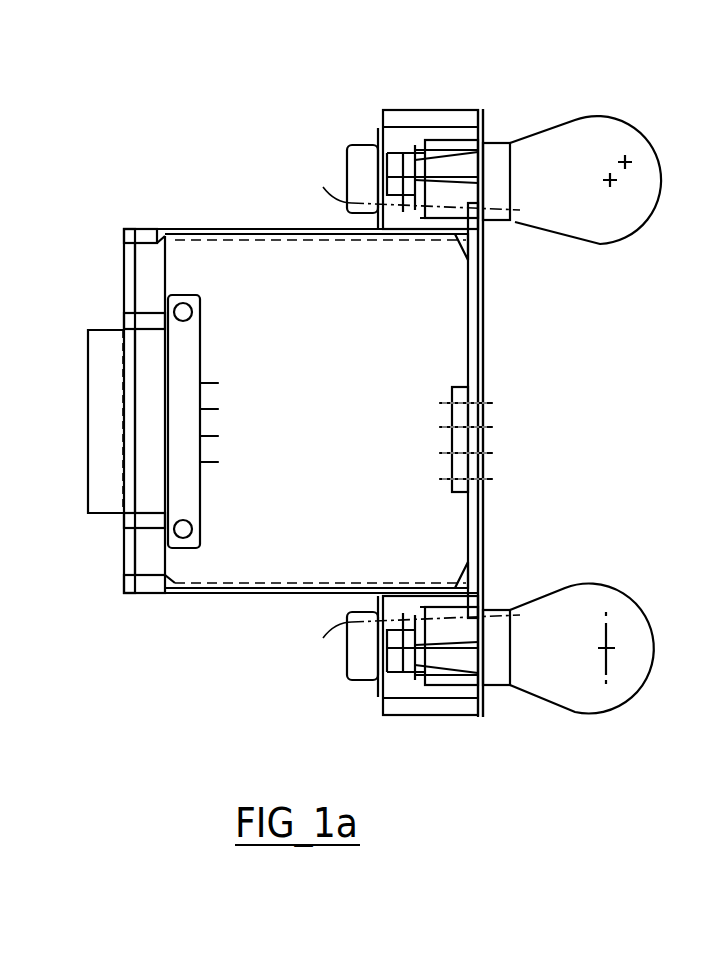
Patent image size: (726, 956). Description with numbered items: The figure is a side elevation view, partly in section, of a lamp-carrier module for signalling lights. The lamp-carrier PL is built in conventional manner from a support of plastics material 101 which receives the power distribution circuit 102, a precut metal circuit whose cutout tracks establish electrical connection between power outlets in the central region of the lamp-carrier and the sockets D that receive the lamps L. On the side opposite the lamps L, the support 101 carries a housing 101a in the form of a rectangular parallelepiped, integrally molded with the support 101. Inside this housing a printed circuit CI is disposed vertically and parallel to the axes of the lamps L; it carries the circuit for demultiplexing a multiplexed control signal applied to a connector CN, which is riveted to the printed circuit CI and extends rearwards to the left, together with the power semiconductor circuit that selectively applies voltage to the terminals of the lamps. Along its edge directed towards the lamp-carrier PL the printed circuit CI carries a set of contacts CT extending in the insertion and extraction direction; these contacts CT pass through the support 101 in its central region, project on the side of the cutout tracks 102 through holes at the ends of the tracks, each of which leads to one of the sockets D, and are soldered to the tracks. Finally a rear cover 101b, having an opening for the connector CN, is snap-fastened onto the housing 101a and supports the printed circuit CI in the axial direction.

The support of plastics material 101 is at (467, 330).
The housing 101a is at (257, 233).
The rear cover 101b is at (123, 555).
The power distribution circuit 102 is at (485, 306).
The lamp-carrier PL is at (496, 352).
The printed circuit CI is at (333, 442).
The connector CN is at (110, 382).
The contacts CT is at (492, 403).
The sockets D is at (438, 99).
The lamps L is at (597, 225).